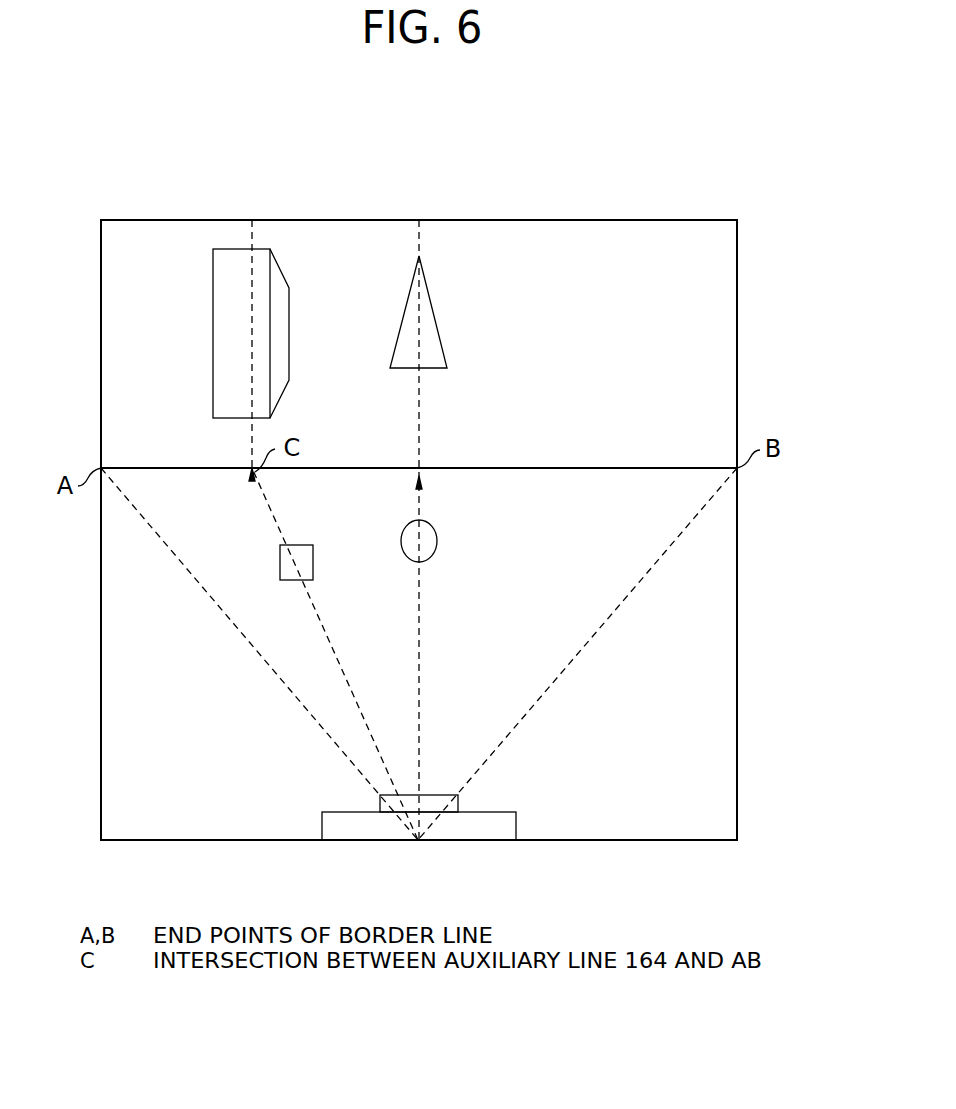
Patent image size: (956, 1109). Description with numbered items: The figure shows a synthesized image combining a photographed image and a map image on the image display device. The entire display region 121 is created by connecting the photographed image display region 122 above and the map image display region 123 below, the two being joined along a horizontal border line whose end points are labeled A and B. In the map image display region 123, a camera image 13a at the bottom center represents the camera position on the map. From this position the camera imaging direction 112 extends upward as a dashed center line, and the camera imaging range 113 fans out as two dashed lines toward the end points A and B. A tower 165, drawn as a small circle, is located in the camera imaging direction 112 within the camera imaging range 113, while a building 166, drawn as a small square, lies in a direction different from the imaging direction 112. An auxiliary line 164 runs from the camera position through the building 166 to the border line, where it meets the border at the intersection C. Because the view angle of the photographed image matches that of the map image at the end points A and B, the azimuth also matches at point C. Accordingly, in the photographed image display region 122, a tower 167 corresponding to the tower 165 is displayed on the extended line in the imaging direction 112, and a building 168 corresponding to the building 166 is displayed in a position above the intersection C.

The entire display region 121 is at (647, 220).
The photographed image display region 122 is at (725, 313).
The map image display region 123 is at (725, 703).
The building on the photographed image 168 is at (292, 310).
The tower on the photographed image 167 is at (430, 313).
The building 166 is at (303, 552).
The tower 165 is at (438, 540).
The auxiliary line 164 is at (342, 642).
The camera imaging direction 112 is at (420, 665).
The camera imaging range 113 is at (603, 600).
The camera image 13a is at (507, 830).